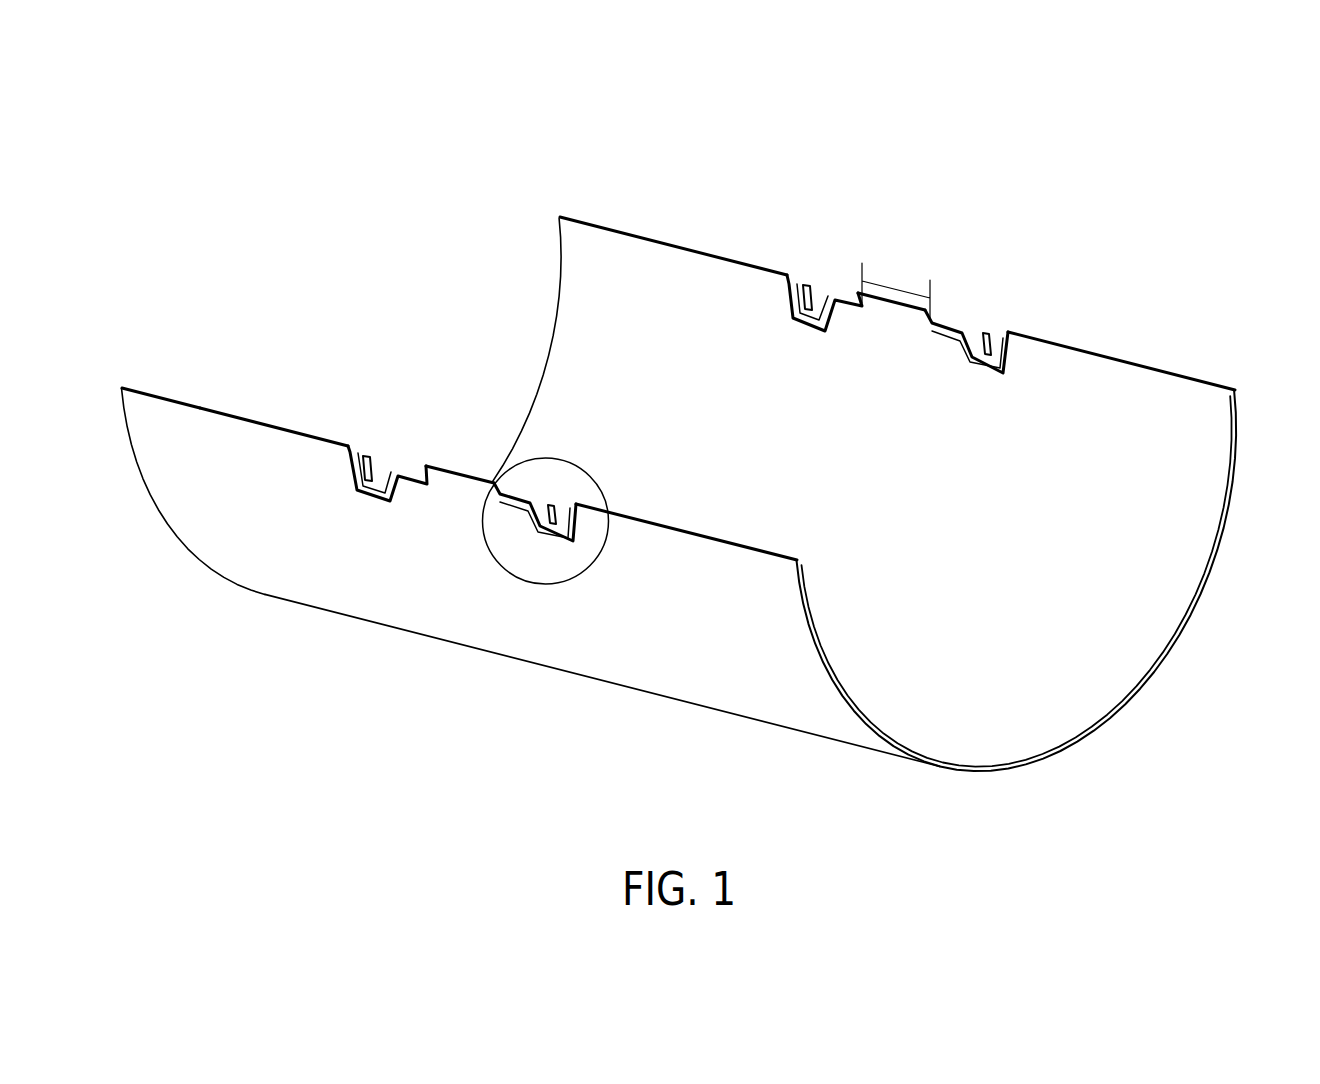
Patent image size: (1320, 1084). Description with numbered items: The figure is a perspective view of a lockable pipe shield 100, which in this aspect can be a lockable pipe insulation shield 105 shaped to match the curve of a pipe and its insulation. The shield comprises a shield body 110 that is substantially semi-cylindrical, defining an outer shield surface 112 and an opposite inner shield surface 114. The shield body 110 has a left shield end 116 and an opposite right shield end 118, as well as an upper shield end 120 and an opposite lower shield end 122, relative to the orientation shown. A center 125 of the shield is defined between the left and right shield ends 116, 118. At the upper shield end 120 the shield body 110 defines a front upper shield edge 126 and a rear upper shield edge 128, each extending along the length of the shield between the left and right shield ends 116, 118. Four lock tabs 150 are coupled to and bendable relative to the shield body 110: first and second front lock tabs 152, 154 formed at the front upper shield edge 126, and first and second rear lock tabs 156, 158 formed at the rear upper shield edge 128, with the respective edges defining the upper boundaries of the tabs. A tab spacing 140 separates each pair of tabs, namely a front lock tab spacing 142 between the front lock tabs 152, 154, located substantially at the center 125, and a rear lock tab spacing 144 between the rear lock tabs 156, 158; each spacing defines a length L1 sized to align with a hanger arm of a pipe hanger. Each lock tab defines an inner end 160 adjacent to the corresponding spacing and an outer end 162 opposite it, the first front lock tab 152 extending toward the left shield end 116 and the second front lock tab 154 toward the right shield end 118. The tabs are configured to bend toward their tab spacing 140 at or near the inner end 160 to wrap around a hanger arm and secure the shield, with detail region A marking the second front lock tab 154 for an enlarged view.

The lockable pipe shield 100 is at (1086, 167).
The lockable pipe insulation shield 105 is at (1135, 233).
The shield body 110 is at (1115, 372).
The outer shield surface 112 is at (177, 508).
The inner shield surface 114 is at (1153, 663).
The left shield end 116 is at (558, 278).
The right shield end 118 is at (1223, 543).
The upper shield end 120 is at (160, 398).
The lower shield end 122 is at (1037, 765).
The center 125 is at (481, 480).
The front upper shield edge 126 is at (240, 418).
The rear upper shield edge 128 is at (679, 247).
The tab spacing 140 is at (451, 498).
The front lock tab spacing 142 is at (535, 520).
The rear lock tab spacing 144 is at (895, 320).
The lock tab 150 is at (377, 495).
The first front lock tab 152 is at (374, 473).
The second front lock tab 154 is at (527, 540).
The first rear lock tab 156 is at (825, 290).
The second rear lock tab 158 is at (972, 328).
The inner end 160 is at (420, 470).
The outer end 162 is at (362, 455).
The detail region A is at (578, 458).
The length L1 is at (896, 282).